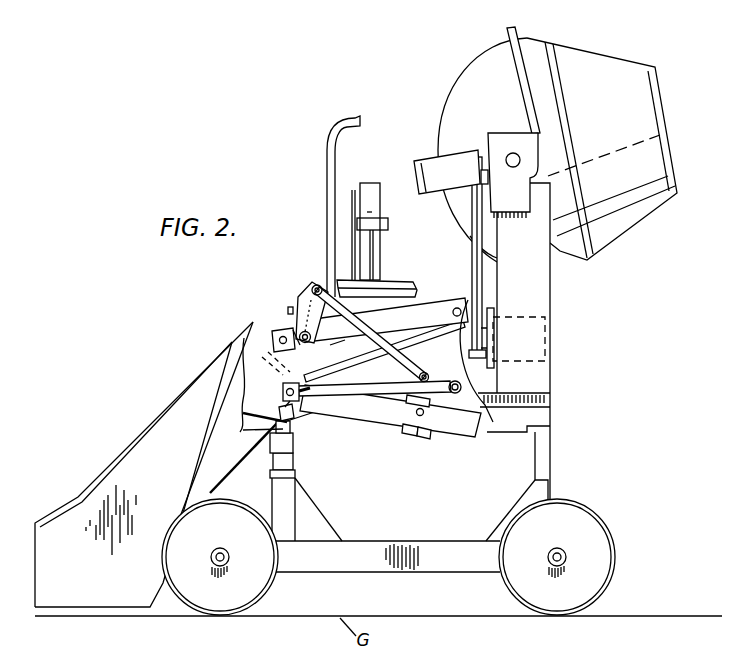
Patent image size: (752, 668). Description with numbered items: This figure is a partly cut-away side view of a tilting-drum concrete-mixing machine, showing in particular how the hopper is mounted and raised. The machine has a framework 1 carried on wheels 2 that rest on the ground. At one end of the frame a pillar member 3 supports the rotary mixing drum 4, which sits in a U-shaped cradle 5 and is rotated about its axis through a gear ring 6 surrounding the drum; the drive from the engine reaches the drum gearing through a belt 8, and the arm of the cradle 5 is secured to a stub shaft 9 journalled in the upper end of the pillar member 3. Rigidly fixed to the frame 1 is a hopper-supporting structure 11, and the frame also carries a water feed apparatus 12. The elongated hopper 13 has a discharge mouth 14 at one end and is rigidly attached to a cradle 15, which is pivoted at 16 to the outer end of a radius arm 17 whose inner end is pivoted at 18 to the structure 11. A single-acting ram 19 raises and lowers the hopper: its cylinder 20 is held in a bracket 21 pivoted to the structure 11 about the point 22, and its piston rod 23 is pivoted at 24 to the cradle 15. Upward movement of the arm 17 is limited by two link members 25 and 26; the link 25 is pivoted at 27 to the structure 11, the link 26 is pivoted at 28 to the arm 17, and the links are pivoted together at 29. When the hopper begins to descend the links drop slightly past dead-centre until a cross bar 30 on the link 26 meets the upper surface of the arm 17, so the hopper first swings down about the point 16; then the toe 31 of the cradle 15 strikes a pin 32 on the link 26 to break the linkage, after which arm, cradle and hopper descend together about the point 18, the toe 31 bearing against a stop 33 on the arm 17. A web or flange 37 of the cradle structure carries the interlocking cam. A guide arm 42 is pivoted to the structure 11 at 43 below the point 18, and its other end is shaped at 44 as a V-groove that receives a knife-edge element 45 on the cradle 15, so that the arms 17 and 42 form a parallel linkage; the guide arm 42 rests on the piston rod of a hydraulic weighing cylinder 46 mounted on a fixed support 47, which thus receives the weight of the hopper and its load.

The framework 1 is at (385, 566).
The wheels 2 is at (250, 583).
The pillar members 3 is at (545, 305).
The rotary mixing drum 4 is at (604, 240).
The U-shaped cradle 5 is at (424, 163).
The gear ring 6 is at (516, 31).
The belt 8 is at (472, 278).
The stub shaft 9 is at (511, 153).
The hopper-supporting structure 11 is at (468, 401).
The water feed apparatus 12 is at (404, 284).
The hopper 13 is at (70, 585).
The discharge mouth 14 is at (228, 338).
The cradle 15 is at (222, 473).
The pivotal attachment point 16 is at (275, 337).
The radius arm 17 is at (425, 318).
The pivotal connection point 18 is at (456, 316).
The ram 19 is at (468, 434).
The cylinder 20 is at (388, 411).
The bracket 21 is at (427, 436).
The pivot point 22 is at (414, 433).
The piston rod 23 is at (294, 418).
The pivotal connection 24 is at (283, 392).
The link member 25 is at (418, 377).
The link member 26 is at (305, 305).
The pivot 27 is at (431, 378).
The pivot point 28 is at (304, 345).
The pivot 29 is at (315, 286).
The cross bar 30 is at (289, 310).
The toe 31 is at (348, 345).
The pin 32 is at (286, 334).
The pin or stop 33 is at (330, 345).
The web or flange 37 is at (262, 357).
The guide arm 42 is at (325, 407).
The pivot point 43 is at (462, 387).
The V-groove 44 is at (292, 428).
The knife-edge element 45 is at (243, 412).
The hydraulic cylinder 46 is at (243, 430).
The fixed support 47 is at (282, 448).